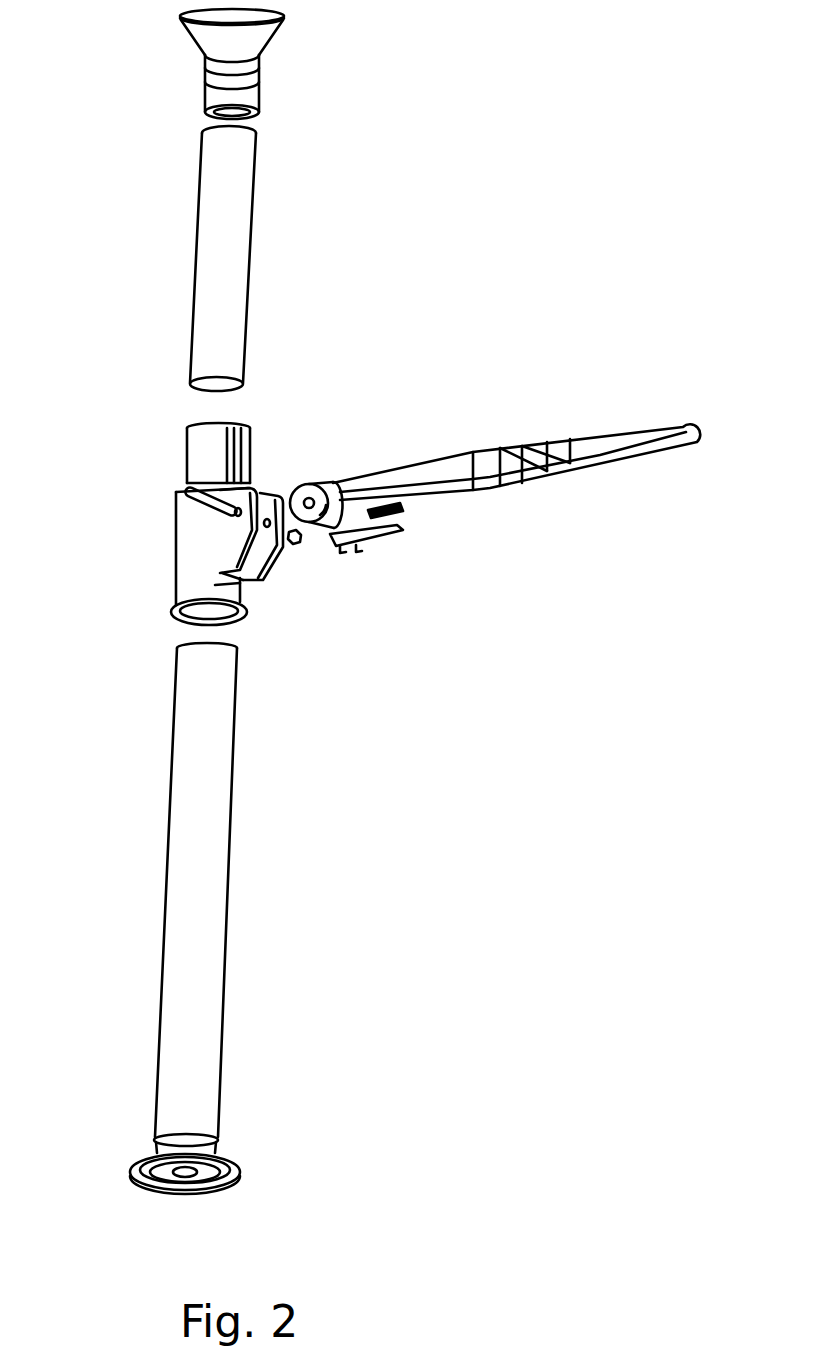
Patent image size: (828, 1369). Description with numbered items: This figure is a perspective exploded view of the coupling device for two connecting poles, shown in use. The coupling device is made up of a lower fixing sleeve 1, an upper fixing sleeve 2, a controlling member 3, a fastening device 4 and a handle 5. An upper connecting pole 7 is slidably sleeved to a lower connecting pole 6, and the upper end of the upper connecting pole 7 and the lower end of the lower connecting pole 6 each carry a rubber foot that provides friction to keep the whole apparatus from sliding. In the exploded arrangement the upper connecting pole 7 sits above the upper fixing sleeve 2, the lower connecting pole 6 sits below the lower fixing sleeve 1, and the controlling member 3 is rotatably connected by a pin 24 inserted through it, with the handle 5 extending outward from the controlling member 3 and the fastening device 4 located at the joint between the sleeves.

The lower fixing sleeve 1 is at (190, 558).
The upper fixing sleeve 2 is at (200, 445).
The controlling member 3 is at (340, 484).
The fastening device 4 is at (344, 632).
The handle 5 is at (627, 443).
The lower connecting pole 6 is at (200, 1042).
The upper connecting pole 7 is at (240, 200).
The pin 24 is at (190, 497).